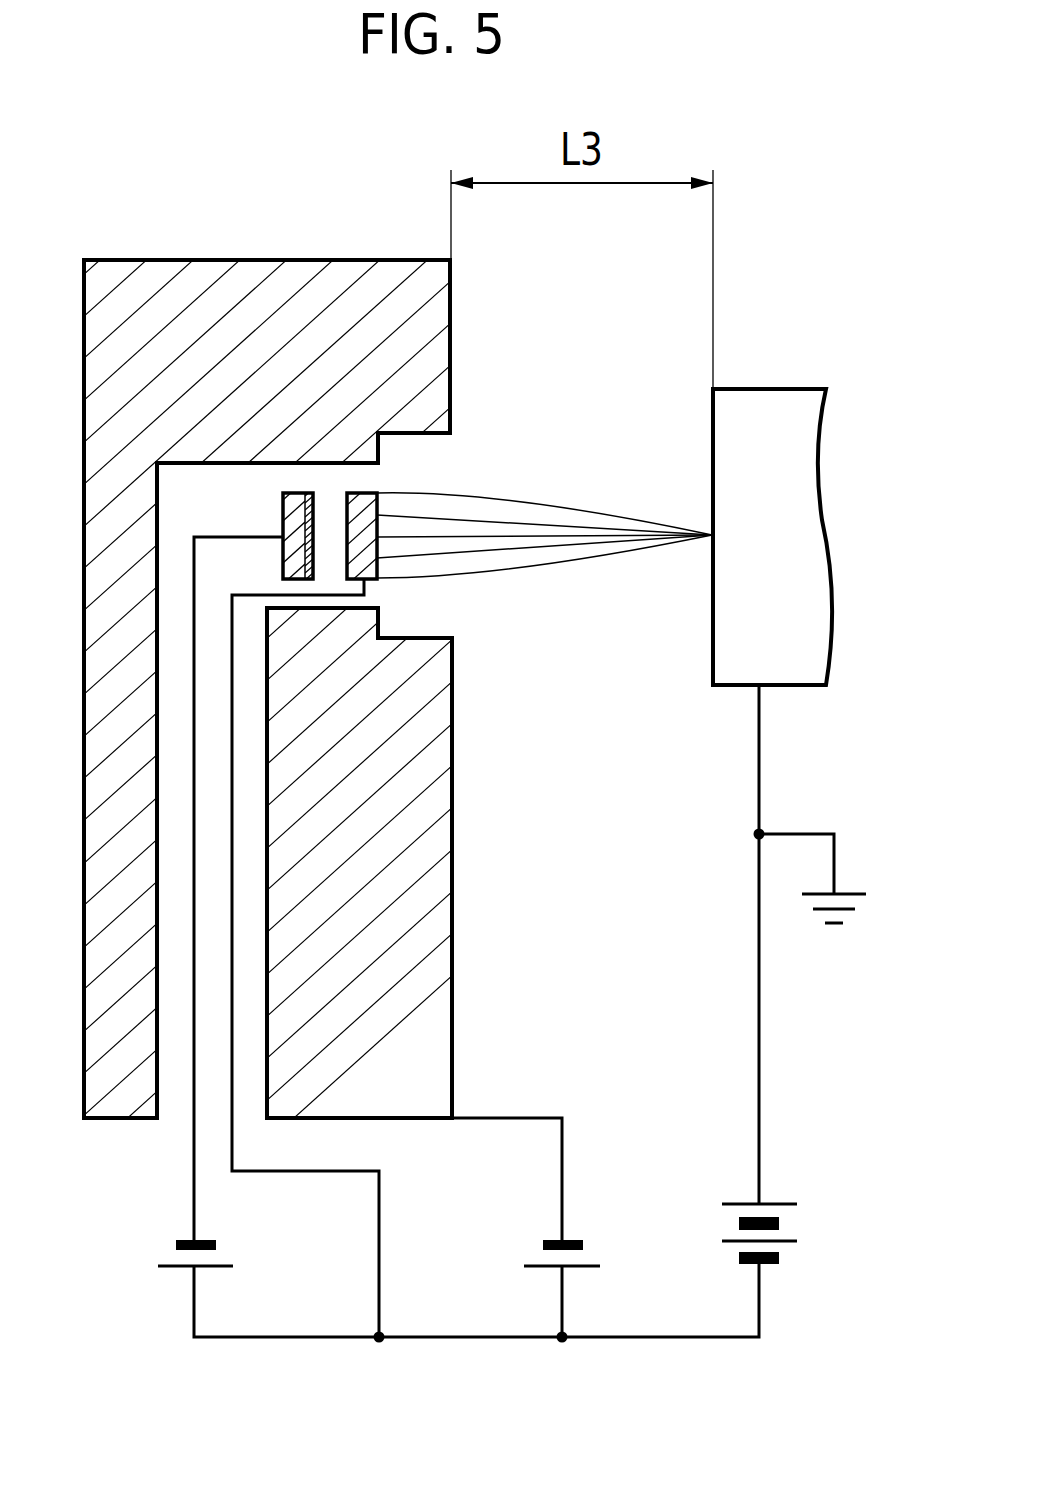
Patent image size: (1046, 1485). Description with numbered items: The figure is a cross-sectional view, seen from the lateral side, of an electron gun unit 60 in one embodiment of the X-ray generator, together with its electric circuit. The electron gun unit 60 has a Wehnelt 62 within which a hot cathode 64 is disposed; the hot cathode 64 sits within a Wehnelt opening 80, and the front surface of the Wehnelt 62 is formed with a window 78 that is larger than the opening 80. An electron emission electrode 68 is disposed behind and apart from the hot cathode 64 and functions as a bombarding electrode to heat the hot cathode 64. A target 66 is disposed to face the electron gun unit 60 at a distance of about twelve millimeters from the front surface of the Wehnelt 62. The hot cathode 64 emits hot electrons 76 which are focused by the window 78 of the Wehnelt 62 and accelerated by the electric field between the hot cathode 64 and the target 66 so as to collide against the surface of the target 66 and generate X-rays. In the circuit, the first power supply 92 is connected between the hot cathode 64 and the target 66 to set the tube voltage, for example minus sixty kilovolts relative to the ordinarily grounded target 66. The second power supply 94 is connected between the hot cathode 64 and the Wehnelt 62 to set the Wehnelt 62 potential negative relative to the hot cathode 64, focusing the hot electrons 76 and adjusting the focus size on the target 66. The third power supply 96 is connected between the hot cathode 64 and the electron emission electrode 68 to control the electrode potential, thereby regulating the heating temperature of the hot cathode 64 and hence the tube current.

The electron gun unit 60 is at (411, 807).
The Wehnelt 62 is at (453, 773).
The hot cathode 64 is at (382, 568).
The target 66 is at (782, 388).
The electron emission electrode 68 is at (282, 507).
The hot electrons 76 is at (560, 567).
The window 78 is at (425, 440).
The Wehnelt opening 80 is at (368, 470).
The first power supply 92 is at (798, 1229).
The second power supply 94 is at (595, 1253).
The third power supply 96 is at (233, 1255).